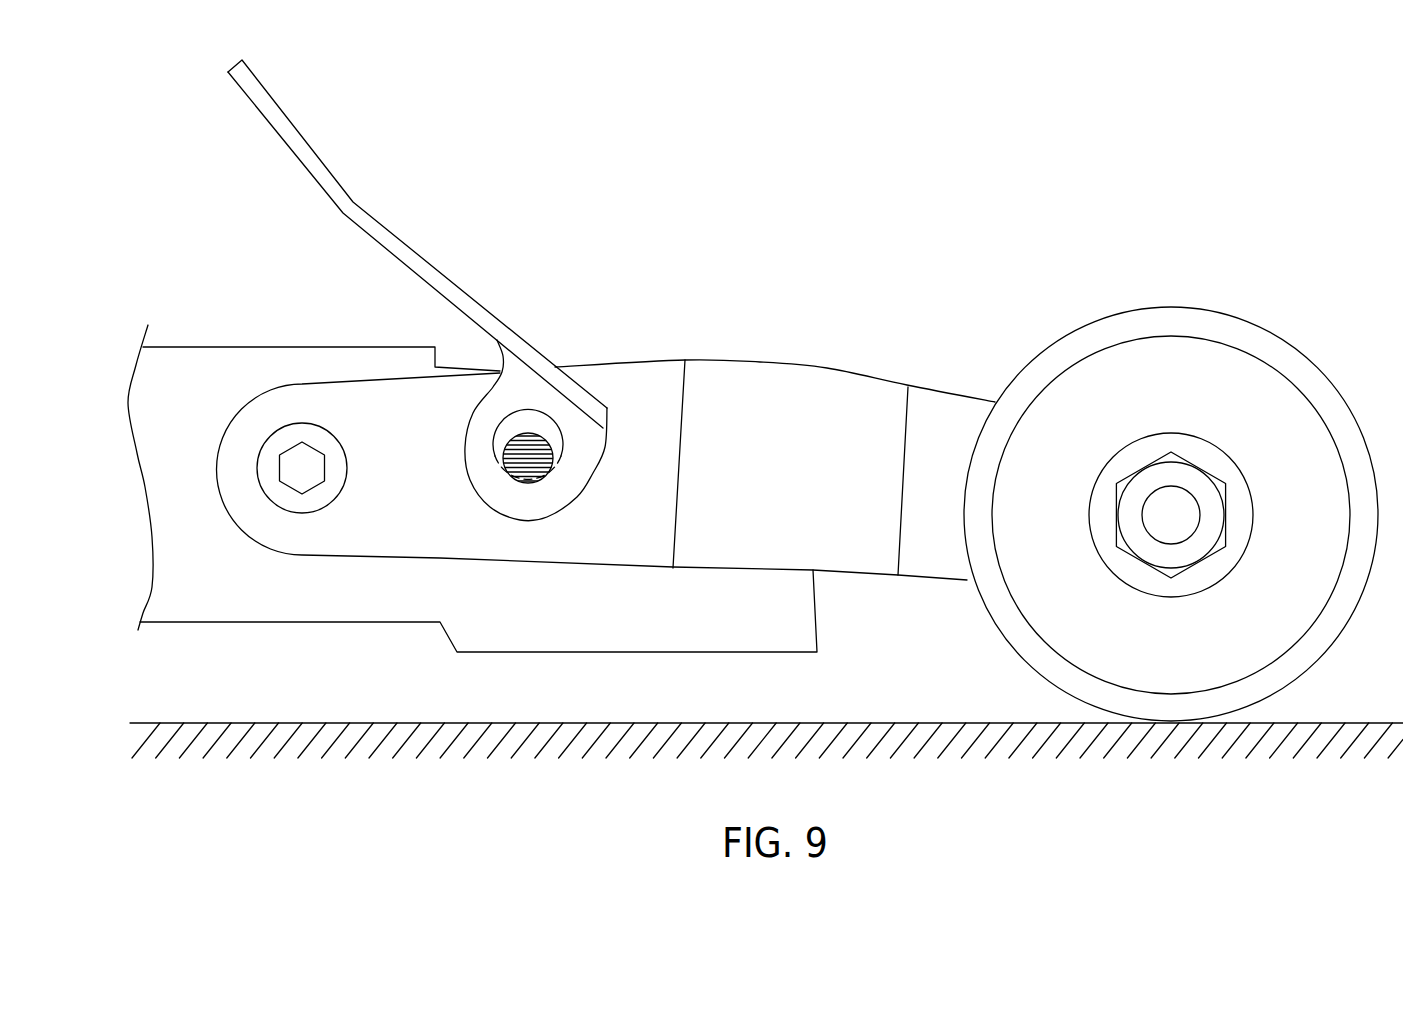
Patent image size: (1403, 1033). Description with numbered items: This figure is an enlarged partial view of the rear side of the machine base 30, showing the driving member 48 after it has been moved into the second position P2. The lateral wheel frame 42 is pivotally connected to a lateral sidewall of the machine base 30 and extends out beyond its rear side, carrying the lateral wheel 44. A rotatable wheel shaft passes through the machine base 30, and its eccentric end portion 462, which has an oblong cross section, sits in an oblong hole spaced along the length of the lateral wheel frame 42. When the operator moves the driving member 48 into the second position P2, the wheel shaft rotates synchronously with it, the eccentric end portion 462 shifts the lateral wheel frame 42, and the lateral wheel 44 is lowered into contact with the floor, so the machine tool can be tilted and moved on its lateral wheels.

The machine base 30 is at (243, 355).
The driving member 48 is at (352, 197).
The eccentric end portion 462 is at (532, 450).
The lateral wheel frame 42 is at (832, 397).
The lateral wheel 44 is at (1159, 363).
The second position P2 is at (330, 137).